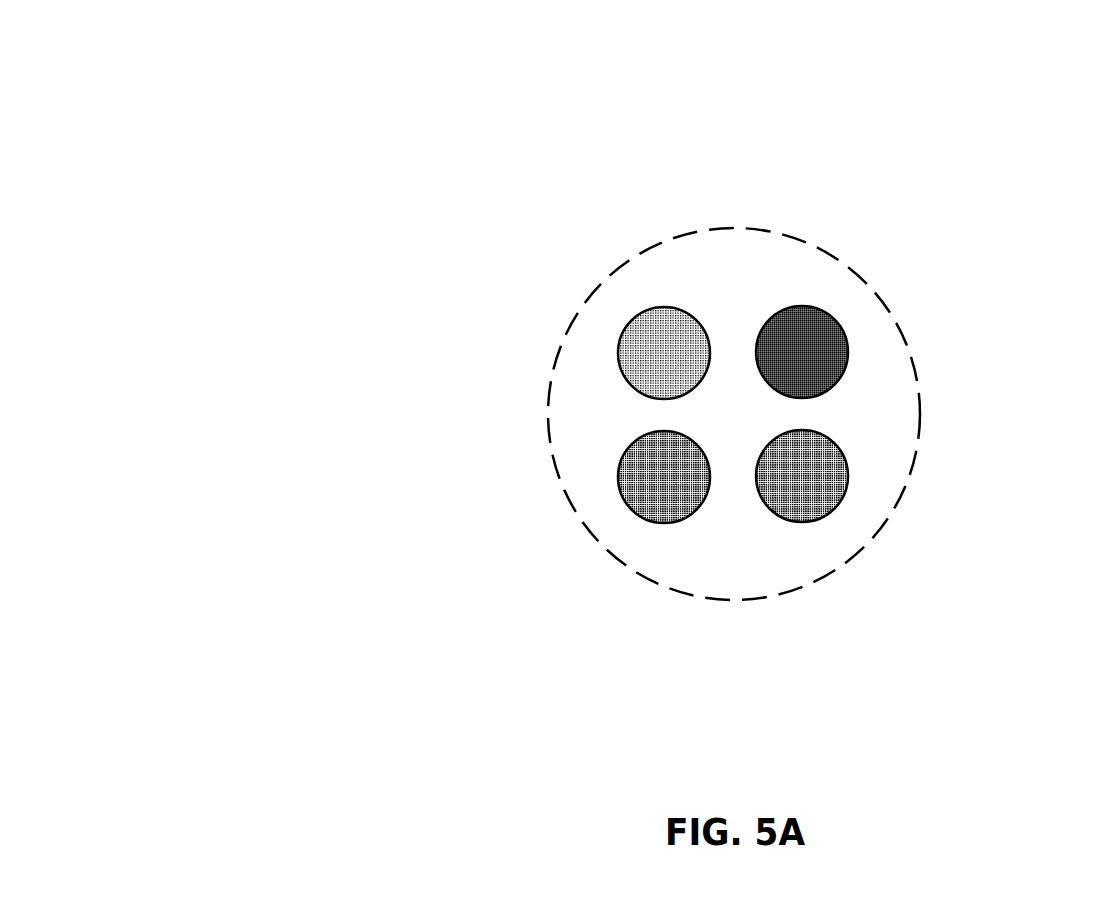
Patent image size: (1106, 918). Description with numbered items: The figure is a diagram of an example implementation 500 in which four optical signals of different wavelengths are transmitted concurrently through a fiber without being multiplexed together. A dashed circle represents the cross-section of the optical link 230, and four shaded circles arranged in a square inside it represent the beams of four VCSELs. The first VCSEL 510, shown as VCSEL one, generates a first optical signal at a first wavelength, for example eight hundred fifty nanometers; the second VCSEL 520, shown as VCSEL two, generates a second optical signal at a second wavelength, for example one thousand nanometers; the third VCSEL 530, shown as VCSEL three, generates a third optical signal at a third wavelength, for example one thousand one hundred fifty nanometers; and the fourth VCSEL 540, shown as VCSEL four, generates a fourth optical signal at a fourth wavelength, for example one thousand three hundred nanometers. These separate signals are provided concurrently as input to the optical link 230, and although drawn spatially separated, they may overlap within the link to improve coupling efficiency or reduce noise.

The example implementation 500 is at (277, 34).
The optical link 230 is at (918, 415).
The first VCSEL 510 is at (655, 343).
The second VCSEL 520 is at (655, 487).
The third VCSEL 530 is at (815, 489).
The fourth VCSEL 540 is at (812, 343).